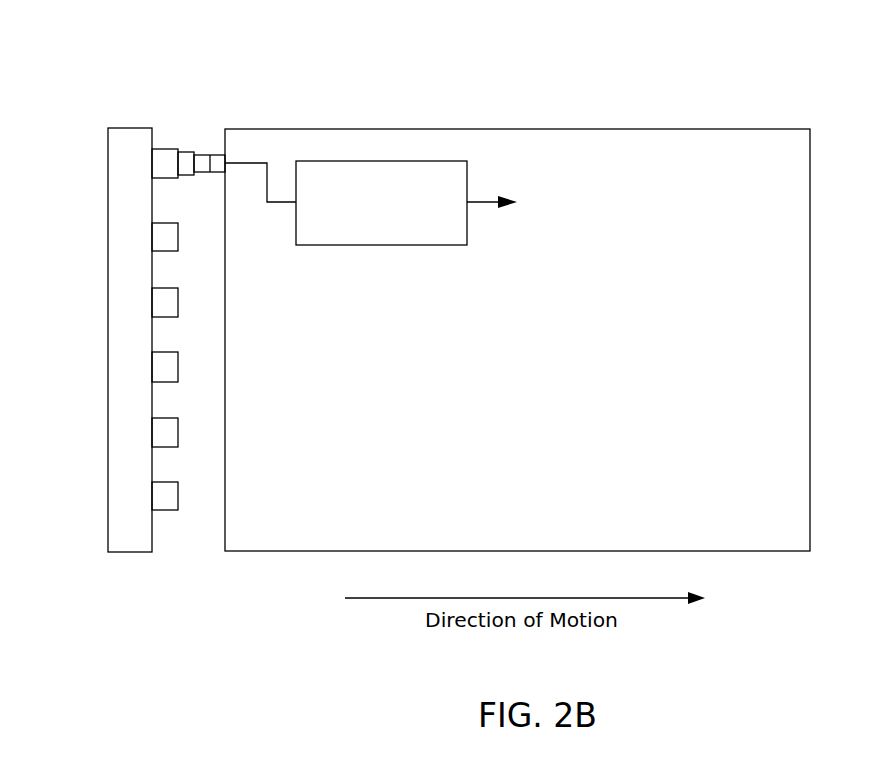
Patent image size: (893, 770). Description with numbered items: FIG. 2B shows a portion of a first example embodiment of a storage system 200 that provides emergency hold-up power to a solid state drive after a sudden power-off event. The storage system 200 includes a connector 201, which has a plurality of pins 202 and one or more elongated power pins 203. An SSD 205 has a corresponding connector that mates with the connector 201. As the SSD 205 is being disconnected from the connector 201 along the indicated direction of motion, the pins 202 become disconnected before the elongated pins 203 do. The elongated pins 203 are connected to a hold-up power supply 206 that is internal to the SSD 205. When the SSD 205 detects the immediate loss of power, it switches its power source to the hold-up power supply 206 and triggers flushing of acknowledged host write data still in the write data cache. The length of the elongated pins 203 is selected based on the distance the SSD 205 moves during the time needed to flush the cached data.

The storage system 200 is at (130, 68).
The connector 201 is at (127, 250).
The pins 202 is at (160, 431).
The elongated power pins 203 is at (164, 162).
The SSD 205 is at (517, 340).
The hold-up power supply 206 is at (371, 203).